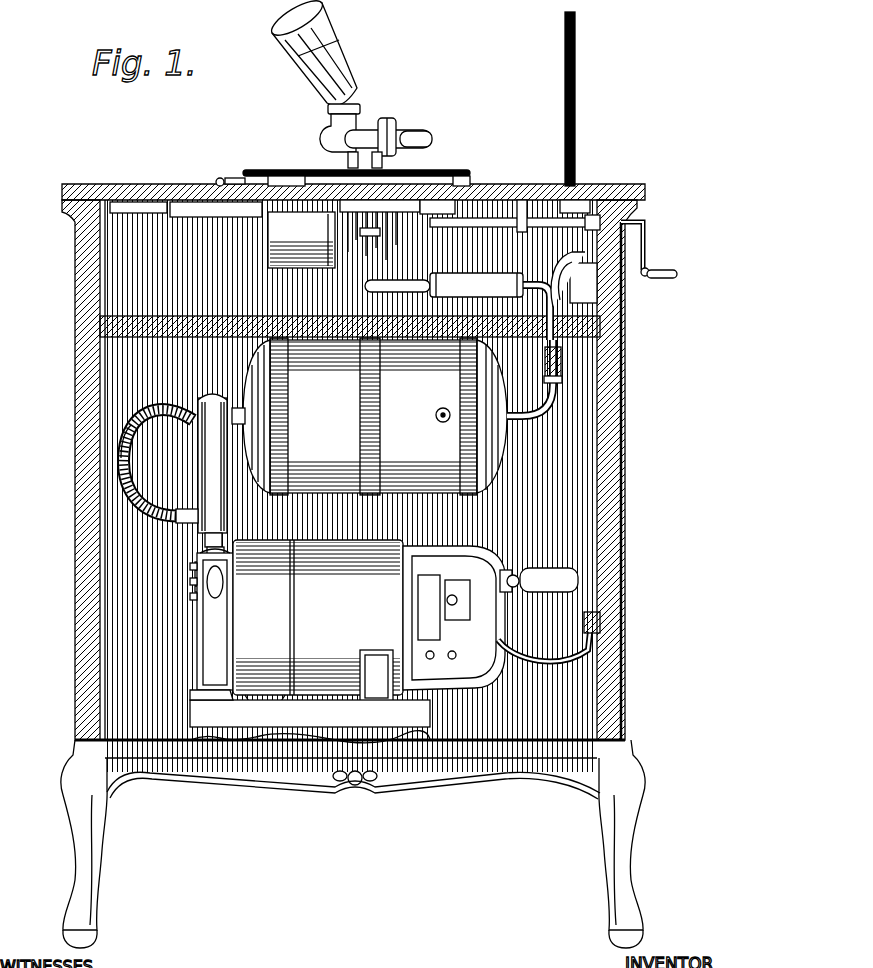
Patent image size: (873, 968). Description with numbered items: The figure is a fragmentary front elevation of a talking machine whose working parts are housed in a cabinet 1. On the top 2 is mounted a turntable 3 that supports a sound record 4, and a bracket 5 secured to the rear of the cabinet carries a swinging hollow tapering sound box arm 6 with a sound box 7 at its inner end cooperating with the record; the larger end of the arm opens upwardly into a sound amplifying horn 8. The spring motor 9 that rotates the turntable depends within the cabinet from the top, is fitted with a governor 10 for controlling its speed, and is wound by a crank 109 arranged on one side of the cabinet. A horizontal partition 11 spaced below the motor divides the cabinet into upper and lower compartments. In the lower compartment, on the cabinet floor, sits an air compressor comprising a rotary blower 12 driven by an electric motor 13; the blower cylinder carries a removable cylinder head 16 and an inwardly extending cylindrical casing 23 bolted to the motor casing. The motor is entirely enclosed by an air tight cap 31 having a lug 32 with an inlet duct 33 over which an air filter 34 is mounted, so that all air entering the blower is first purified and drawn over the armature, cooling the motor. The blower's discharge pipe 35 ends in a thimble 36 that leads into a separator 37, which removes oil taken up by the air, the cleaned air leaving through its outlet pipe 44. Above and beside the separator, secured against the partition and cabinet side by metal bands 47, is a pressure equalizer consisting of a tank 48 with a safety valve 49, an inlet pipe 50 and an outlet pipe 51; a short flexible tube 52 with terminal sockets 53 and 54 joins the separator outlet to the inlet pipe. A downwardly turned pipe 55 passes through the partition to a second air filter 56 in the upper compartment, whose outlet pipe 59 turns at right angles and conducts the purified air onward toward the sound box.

The cabinet 1 is at (612, 440).
The top 2 is at (105, 183).
The turntable 3 is at (242, 180).
The sound record 4 is at (279, 169).
The bracket 5 is at (343, 162).
The sound box arm 6 is at (327, 129).
The sound box 7 is at (392, 121).
The sound amplifying horn 8 is at (307, 60).
The motor 9 is at (268, 262).
The governor 10 is at (400, 235).
The horizontal partition 11 is at (600, 327).
The rotary blower 12 is at (200, 612).
The electric motor 13 is at (318, 621).
The cylinder head 16 is at (190, 660).
The cylindrical casing 23 is at (263, 617).
The air tight cap 31 is at (473, 563).
The lug 32 is at (504, 571).
The inlet duct 33 is at (520, 593).
The air filter 34 is at (557, 570).
The discharge pipe 35 is at (197, 580).
The thimble 36 is at (200, 545).
The separator 37 is at (217, 483).
The outlet pipe 44 is at (193, 527).
The metal bands 47 is at (283, 398).
The tank 48 is at (375, 416).
The safety valve 49 is at (436, 415).
The inlet pipe 50 is at (235, 403).
The outlet pipe 51 is at (523, 410).
The flexible tube 52 is at (140, 463).
The terminal socket 53 is at (173, 500).
The terminal socket 54 is at (128, 432).
The downwardly turned pipe 55 is at (554, 282).
The second air filter 56 is at (460, 277).
The outlet pipe 59 is at (403, 282).
The crank 109 is at (647, 243).